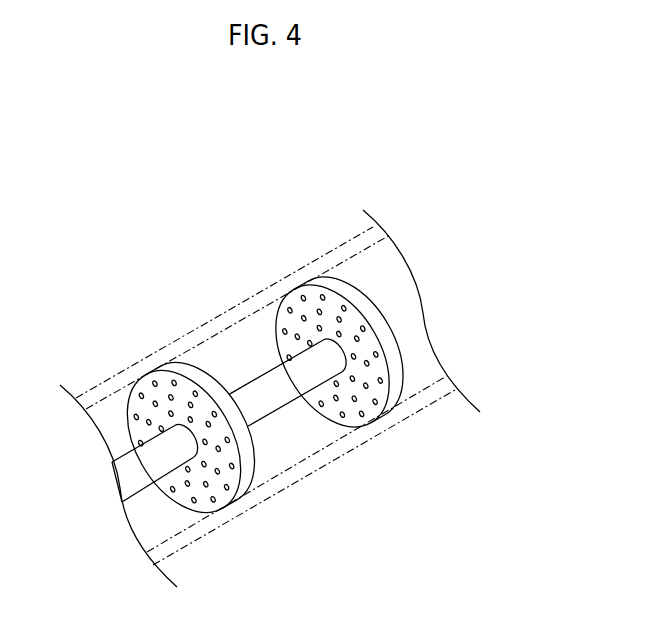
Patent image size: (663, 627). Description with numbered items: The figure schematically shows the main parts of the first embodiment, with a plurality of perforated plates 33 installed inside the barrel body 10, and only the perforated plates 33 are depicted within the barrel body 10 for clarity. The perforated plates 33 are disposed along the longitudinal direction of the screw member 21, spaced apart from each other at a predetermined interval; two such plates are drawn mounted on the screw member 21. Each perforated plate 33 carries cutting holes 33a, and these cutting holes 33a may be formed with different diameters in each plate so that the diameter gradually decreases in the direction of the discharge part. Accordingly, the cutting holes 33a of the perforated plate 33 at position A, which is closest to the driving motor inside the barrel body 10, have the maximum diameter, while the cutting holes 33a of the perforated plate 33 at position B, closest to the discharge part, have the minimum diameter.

The barrel body 10 is at (212, 327).
The screw member 21 is at (270, 407).
The perforated plate 33 is at (268, 425).
The cutting holes 33a is at (148, 373).
The position A is at (248, 514).
The position B is at (397, 427).